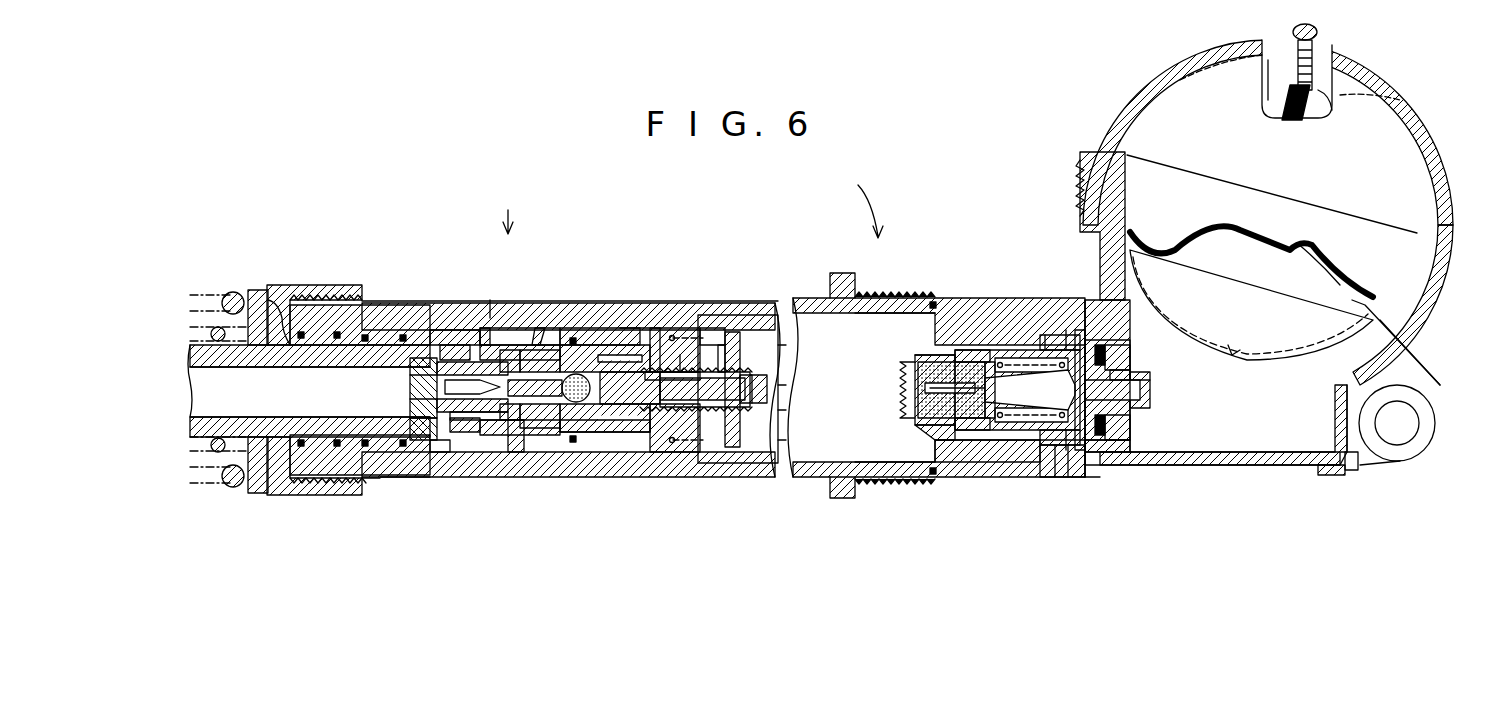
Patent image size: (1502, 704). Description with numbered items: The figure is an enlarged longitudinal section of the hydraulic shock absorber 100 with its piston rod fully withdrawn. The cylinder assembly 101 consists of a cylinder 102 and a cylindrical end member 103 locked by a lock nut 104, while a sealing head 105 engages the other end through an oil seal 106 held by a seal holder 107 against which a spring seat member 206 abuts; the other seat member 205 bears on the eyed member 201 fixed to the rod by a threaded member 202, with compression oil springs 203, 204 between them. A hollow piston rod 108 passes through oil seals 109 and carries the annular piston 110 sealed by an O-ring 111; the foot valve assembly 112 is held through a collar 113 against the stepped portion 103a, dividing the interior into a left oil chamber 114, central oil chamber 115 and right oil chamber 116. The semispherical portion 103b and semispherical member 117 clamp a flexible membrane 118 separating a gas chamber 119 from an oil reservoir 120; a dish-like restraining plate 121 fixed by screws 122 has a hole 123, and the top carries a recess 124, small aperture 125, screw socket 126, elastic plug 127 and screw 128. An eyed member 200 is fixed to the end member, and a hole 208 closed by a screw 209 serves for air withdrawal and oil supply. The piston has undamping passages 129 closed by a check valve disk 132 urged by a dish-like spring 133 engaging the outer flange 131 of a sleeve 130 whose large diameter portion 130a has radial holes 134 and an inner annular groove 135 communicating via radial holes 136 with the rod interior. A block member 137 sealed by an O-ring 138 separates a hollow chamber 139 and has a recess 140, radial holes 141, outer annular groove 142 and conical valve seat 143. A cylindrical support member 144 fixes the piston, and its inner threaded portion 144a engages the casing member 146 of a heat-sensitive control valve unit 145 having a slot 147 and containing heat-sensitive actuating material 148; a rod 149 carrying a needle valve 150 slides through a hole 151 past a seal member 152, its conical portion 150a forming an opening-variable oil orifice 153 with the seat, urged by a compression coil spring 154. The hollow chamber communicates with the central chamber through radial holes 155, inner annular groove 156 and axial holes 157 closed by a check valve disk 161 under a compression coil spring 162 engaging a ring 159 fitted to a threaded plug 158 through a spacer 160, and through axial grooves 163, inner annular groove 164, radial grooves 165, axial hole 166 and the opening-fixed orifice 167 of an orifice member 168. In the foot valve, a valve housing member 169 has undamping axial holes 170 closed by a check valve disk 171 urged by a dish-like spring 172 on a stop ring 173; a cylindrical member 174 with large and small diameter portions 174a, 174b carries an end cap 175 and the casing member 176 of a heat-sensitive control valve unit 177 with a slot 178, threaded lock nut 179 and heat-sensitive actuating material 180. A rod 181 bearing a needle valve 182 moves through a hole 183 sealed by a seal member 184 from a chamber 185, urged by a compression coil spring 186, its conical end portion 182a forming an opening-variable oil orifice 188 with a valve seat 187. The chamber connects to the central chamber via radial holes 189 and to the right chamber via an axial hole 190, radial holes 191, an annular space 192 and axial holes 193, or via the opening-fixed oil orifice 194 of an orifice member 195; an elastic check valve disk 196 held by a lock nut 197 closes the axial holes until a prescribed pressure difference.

The hydraulic shock absorber 100 is at (503, 204).
The cylinder assembly 101 is at (859, 198).
The cylinder 102 is at (770, 302).
The cylindrical end member 103 is at (1260, 465).
The stepped portion 103a is at (1090, 300).
The semispherical portion 103b is at (1395, 345).
The lock nut 104 is at (850, 275).
The sealing head 105 is at (310, 320).
The oil seal 106 is at (335, 285).
The seal holder 107 is at (272, 290).
The hollow piston rod 108 is at (245, 420).
The oil seals 109 is at (300, 420).
The annular piston 110 is at (642, 340).
The O-ring 111 is at (573, 338).
The foot valve assembly 112 is at (1160, 452).
The collar 113 is at (1045, 470).
The left oil chamber 114 is at (505, 300).
The central oil chamber 115 is at (810, 470).
The right oil chamber 116 is at (1290, 440).
The semispherical member 117 is at (1410, 115).
The flexible membrane 118 is at (1255, 240).
The gas chamber 119 is at (1355, 95).
The oil reservoir 120 is at (1320, 260).
The dish-like restraining plate 121 is at (1270, 332).
The screws 122 is at (1155, 290).
The hole 123 is at (1240, 348).
The recess 124 is at (1320, 108).
The small aperture 125 is at (1266, 75).
The screw socket 126 is at (1280, 45).
The elastic plug 127 is at (1287, 120).
The screw 128 is at (1308, 30).
The undamping passages 129 is at (600, 345).
The sleeve 130 is at (456, 335).
The large diameter portion 130a is at (448, 318).
The outer flange 131 is at (486, 330).
The check valve disk 132 is at (562, 332).
The dish-like spring 133 is at (536, 328).
The radial holes 134 is at (425, 332).
The inner annular groove 135 is at (390, 320).
The radial holes 136 is at (410, 368).
The block member 137 is at (408, 386).
The O-ring 138 is at (410, 408).
The hollow chamber 139 is at (500, 440).
The recess 140 is at (395, 478).
The radial holes 141 is at (375, 478).
The outer annular groove 142 is at (425, 455).
The valve seat 143 is at (432, 442).
The cylindrical support member 144 is at (712, 340).
The inner threaded portion 144a is at (662, 425).
The heat-sensitive control valve unit 145 is at (540, 440).
The casing member 146 is at (692, 420).
The slot 147 is at (745, 430).
The heat-sensitive actuating material 148 is at (640, 425).
The rod 149 is at (620, 432).
The needle valve 150 is at (520, 441).
The conical portion 150a is at (512, 452).
The hole 151 is at (570, 430).
The seal member 152 is at (590, 435).
The opening-variable oil orifice 153 is at (470, 440).
The compression coil spring 154 is at (472, 335).
The radial holes 155 is at (520, 330).
The inner annular groove 156 is at (610, 355).
The axial holes 157 is at (660, 300).
The threaded plug 158 is at (790, 410).
The ring 159 is at (740, 352).
The spacer 160 is at (788, 440).
The check valve disk 161 is at (665, 345).
The compression coil spring 162 is at (732, 336).
The axial grooves 163 is at (647, 360).
The inner annular groove 164 is at (681, 355).
The radial grooves 165 is at (758, 378).
The axial hole 166 is at (744, 364).
The opening-fixed orifice 167 is at (790, 385).
The orifice member 168 is at (790, 355).
The valve housing member 169 is at (1092, 472).
The undamping axial holes 170 is at (1085, 455).
The check valve disk 171 is at (1075, 455).
The dish-like spring 172 is at (1060, 455).
The stop ring 173 is at (1050, 436).
The cylindrical member 174 is at (935, 450).
The large diameter portion 174a is at (903, 432).
The small diameter portion 174b is at (1150, 402).
The end cap 175 is at (935, 355).
The casing member 176 is at (905, 395).
The heat-sensitive control valve unit 177 is at (895, 465).
The slot 178 is at (920, 378).
The threaded lock nut 179 is at (920, 352).
The heat-sensitive actuating material 180 is at (914, 360).
The rod 181 is at (900, 420).
The needle valve 182 is at (1010, 360).
The conical end portion 182a is at (1062, 345).
The hole 183 is at (1000, 376).
The seal member 184 is at (985, 362).
The chamber 185 is at (1010, 450).
The compression coil spring 186 is at (990, 420).
The valve seat 187 is at (1095, 452).
The opening-variable oil orifice 188 is at (1072, 340).
The radial holes 189 is at (1045, 335).
The axial hole 190 is at (1142, 424).
The radial holes 191 is at (1118, 445).
The annular space 192 is at (1110, 440).
The axial holes 193 is at (1106, 347).
The opening-fixed oil orifice 194 is at (1152, 398).
The orifice member 195 is at (1150, 386).
The elastic check valve disk 196 is at (1116, 356).
The lock nut 197 is at (1130, 370).
The eyed member 200 is at (1435, 442).
The eyed member 201 is at (340, 4).
The threaded member 202 is at (272, 4).
The compression oil spring 203 is at (234, 292).
The compression oil spring 204 is at (226, 298).
The spring seat member 205 is at (385, 11).
The spring seat member 206 is at (258, 290).
The hole 208 is at (1355, 462).
The screw 209 is at (1325, 470).